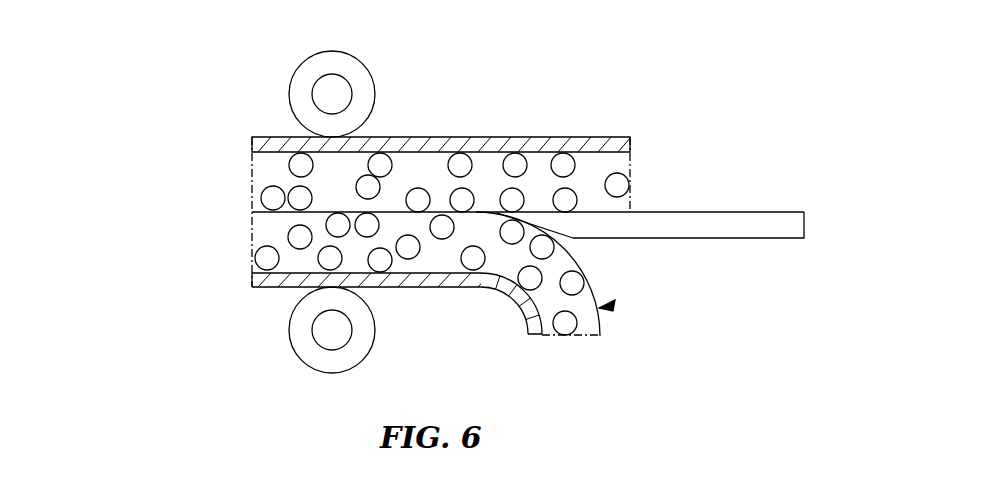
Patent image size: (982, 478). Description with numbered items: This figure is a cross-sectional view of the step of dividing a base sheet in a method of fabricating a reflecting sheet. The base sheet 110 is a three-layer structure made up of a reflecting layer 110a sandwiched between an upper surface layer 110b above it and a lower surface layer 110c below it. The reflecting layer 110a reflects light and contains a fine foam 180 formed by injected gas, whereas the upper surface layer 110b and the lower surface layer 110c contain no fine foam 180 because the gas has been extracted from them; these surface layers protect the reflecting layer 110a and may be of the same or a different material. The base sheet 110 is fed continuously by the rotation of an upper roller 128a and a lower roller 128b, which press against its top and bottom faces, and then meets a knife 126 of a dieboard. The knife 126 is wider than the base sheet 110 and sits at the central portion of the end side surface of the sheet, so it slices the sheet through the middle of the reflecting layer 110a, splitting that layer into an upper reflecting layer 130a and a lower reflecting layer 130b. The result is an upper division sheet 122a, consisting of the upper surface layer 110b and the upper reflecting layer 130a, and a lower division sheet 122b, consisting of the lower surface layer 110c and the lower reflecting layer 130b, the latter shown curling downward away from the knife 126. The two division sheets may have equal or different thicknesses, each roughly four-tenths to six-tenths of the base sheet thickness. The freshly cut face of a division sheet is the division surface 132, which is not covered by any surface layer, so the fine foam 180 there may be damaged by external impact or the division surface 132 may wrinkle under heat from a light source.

The base sheet 110 is at (103, 165).
The reflecting layer 110a is at (157, 195).
The upper surface layer 110b is at (265, 147).
The lower surface layer 110c is at (262, 277).
The upper reflecting layer 130a is at (262, 178).
The lower reflecting layer 130b is at (262, 220).
The upper division sheet 122a is at (645, 139).
The lower division sheet 122b is at (600, 338).
The knife 126 is at (747, 227).
The upper roller 128a is at (358, 92).
The lower roller 128b is at (357, 332).
The division surface 132 is at (613, 306).
The fine foam 180 is at (473, 260).